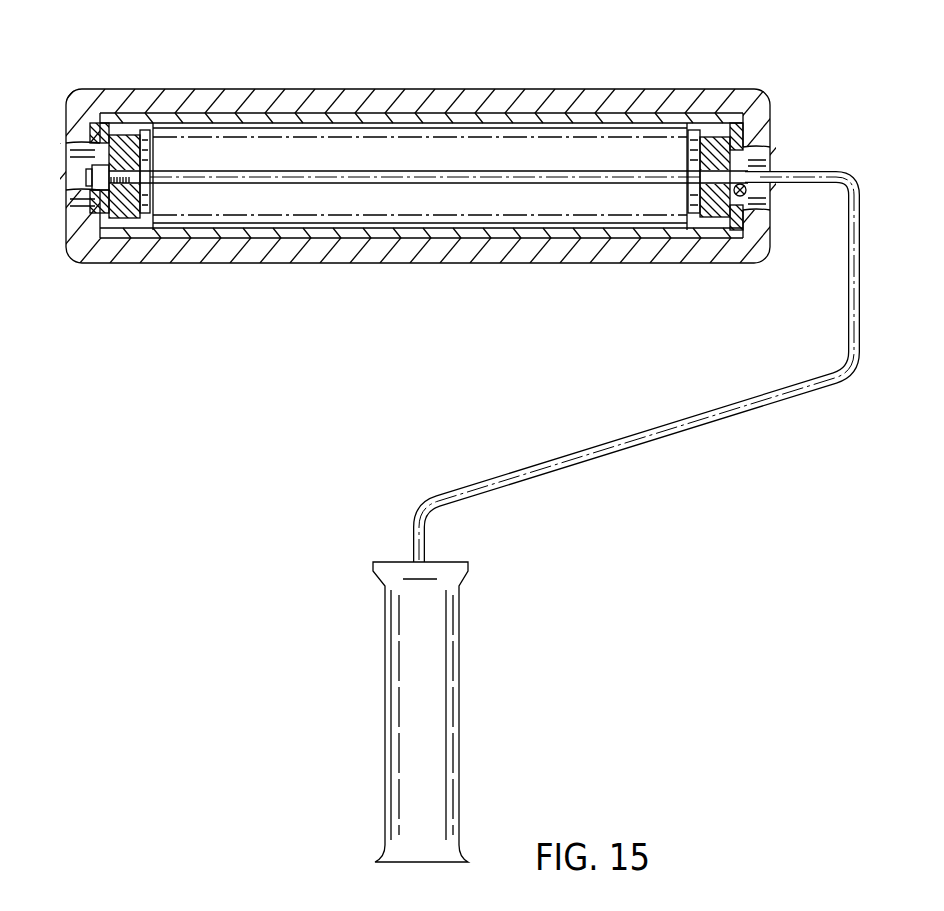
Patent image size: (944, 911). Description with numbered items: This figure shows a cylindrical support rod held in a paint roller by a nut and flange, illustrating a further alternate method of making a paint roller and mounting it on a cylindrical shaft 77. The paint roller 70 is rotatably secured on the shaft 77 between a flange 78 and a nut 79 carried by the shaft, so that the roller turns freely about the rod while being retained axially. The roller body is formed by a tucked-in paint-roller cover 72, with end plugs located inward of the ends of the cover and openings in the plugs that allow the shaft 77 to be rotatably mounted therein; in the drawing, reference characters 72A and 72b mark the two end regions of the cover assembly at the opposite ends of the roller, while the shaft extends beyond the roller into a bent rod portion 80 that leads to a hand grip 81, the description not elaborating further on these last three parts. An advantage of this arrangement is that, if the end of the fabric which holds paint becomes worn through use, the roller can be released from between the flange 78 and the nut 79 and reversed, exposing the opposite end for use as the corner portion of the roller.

The paint roller 70 is at (531, 90).
The tucked-in paint-roller cover 72 is at (593, 89).
The first bearing 72A is at (150, 143).
The second bearing 72b is at (690, 145).
The cylindrical shaft 77 is at (368, 171).
The flange 78 is at (745, 162).
The nut 79 is at (92, 188).
The handle rod 80 is at (658, 440).
The handle grip 81 is at (398, 690).